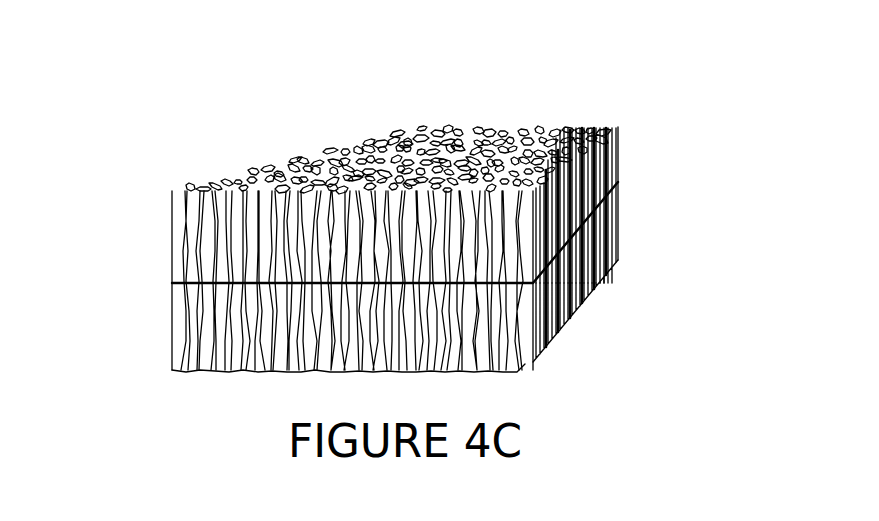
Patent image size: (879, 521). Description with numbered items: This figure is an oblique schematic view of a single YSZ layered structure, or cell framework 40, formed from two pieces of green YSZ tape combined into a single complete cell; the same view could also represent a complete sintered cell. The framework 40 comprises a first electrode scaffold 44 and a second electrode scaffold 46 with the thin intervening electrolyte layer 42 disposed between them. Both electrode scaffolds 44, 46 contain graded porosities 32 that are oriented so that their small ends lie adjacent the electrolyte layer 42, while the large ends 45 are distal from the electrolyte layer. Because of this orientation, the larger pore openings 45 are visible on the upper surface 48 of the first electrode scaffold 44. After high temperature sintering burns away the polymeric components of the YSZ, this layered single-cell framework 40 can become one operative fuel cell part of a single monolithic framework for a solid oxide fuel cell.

The layered single-cell framework structure 40 is at (586, 68).
The graded porosities 32 is at (340, 335).
The electrolyte layer 42 is at (187, 282).
The first electrode scaffold 44 is at (596, 188).
The second electrode scaffold 46 is at (580, 266).
The larger pore openings 45 is at (300, 160).
The upper surface 48 is at (407, 140).